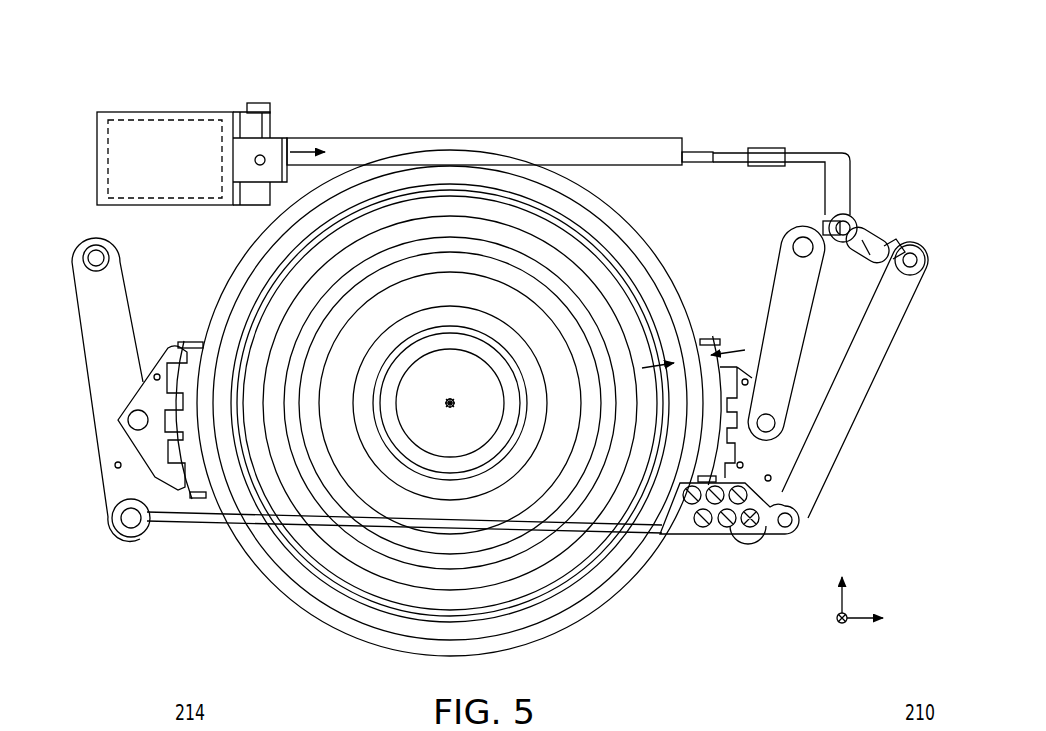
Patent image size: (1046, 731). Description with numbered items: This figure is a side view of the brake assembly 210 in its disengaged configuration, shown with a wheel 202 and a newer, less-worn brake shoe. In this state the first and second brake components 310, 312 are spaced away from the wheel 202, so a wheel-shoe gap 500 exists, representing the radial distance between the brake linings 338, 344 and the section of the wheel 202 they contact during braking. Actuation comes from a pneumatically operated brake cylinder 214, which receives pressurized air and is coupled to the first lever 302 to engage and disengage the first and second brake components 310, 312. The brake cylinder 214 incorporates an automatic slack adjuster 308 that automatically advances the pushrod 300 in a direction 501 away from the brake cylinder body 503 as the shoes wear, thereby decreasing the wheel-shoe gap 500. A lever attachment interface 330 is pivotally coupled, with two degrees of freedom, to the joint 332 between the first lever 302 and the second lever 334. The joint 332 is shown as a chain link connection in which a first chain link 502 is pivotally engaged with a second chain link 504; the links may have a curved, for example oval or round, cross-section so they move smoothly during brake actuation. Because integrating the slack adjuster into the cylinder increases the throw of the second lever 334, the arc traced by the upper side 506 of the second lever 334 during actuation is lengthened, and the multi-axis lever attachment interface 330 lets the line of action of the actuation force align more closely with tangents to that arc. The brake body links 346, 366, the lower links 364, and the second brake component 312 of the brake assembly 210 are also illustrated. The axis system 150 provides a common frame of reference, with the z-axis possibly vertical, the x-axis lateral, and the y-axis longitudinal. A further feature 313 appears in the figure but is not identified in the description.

The axis system 150 is at (892, 581).
The wheel 202 is at (238, 253).
The brake assembly 210 is at (890, 70).
The brake cylinder 214 is at (182, 80).
The pushrod 300 is at (368, 138).
The first lever 302 is at (802, 140).
The automatic slack adjuster 308 is at (120, 141).
The first brake component 310 is at (690, 404).
The second brake component 312 is at (218, 464).
The rotor axis 313 is at (450, 398).
The lever attachment interface 330 is at (844, 212).
The joint 332 is at (900, 217).
The second lever 334 is at (790, 343).
The lining 338 is at (700, 478).
The lining 344 is at (205, 497).
The brake body link 346 is at (845, 385).
The lower link 364 is at (640, 532).
The brake body link 366 is at (122, 330).
The wheel-shoe gap 500 is at (720, 342).
The direction 501 is at (312, 147).
The first chain link 502 is at (865, 246).
The brake cylinder body 503 is at (197, 110).
The second chain link 504 is at (903, 245).
The upper side 506 is at (910, 280).